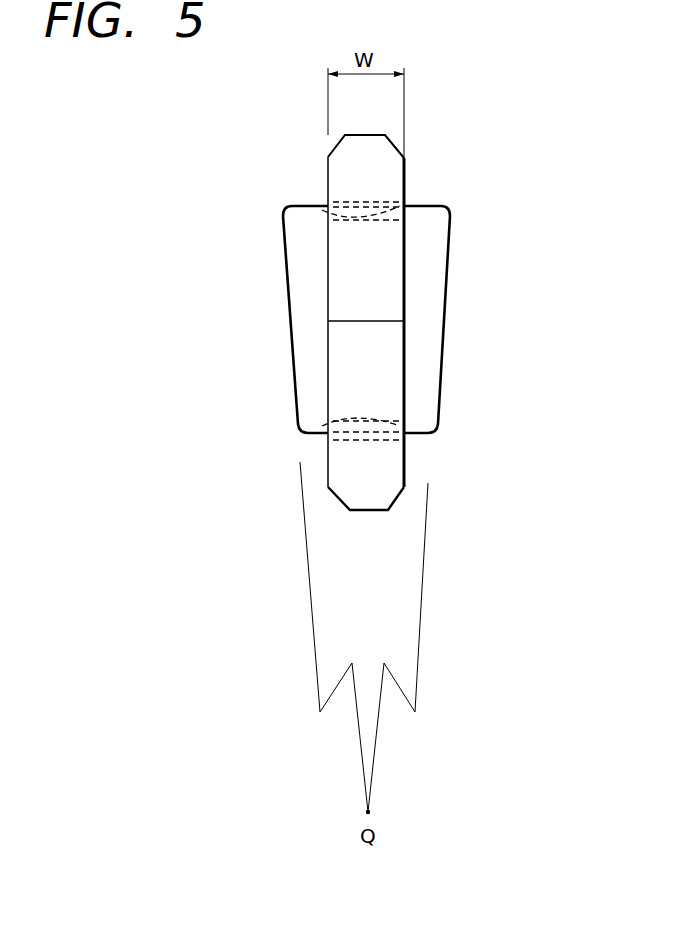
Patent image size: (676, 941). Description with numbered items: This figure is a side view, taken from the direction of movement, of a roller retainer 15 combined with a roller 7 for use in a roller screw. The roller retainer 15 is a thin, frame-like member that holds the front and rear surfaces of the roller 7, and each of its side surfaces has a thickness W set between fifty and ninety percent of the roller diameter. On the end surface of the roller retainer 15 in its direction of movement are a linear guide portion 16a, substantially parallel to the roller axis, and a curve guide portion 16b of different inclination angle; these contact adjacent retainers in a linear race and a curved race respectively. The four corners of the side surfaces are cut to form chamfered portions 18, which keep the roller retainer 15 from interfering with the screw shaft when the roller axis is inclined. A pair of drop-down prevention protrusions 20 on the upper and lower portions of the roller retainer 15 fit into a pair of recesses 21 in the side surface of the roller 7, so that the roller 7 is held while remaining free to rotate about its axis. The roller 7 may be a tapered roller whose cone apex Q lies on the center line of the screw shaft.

The roller 7 is at (428, 326).
The roller retainer 15 is at (348, 160).
The linear guide portion 16a is at (385, 283).
The curve guide portion 16b is at (386, 370).
The chamfered portions 18 is at (290, 206).
The drop-down prevention protrusions 20 is at (378, 205).
The recesses 21 is at (410, 216).